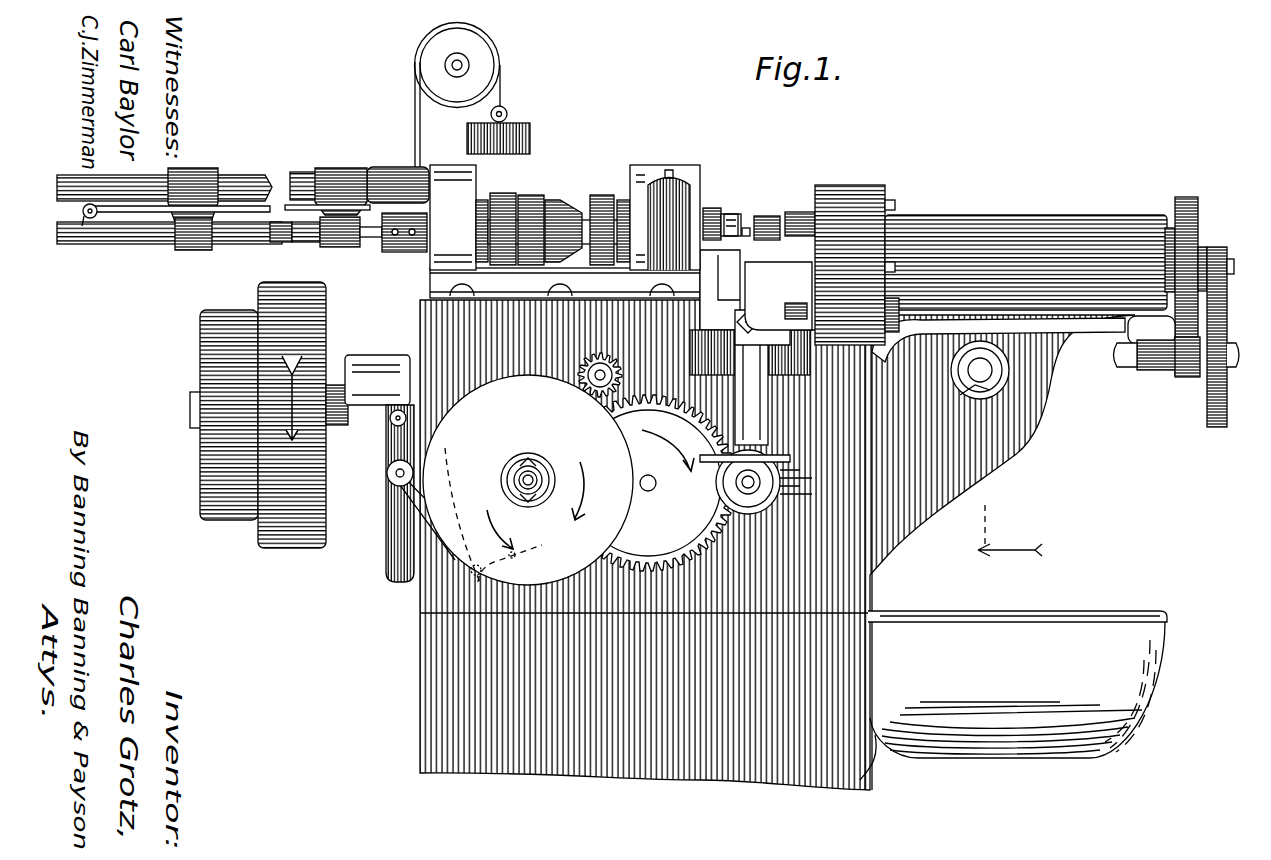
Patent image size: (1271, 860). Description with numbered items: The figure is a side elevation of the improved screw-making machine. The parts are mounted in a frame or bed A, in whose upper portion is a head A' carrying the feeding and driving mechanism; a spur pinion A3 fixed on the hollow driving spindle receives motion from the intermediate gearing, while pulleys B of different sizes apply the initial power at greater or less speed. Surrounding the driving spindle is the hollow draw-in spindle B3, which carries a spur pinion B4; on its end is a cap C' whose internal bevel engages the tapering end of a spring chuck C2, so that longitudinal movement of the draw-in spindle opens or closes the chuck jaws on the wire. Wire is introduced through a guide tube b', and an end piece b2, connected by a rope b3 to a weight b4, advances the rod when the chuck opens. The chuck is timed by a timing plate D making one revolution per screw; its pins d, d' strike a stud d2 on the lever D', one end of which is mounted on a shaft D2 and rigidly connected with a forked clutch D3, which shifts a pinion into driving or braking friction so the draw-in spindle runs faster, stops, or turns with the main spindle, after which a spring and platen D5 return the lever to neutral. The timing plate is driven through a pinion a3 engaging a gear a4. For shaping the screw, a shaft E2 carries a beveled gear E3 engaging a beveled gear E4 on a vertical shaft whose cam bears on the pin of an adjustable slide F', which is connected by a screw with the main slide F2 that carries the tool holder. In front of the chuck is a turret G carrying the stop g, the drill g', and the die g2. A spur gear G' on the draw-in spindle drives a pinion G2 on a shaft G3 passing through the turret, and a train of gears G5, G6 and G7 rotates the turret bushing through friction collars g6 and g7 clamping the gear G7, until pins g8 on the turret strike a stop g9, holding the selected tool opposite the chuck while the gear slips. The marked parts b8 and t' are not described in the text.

The frame or bed A is at (793, 545).
The head A' is at (417, 198).
The spur pinion A3 is at (498, 216).
The pulleys B is at (278, 412).
The draw-in spindle B3 is at (555, 205).
The spur pinion B4 is at (532, 215).
The guide tube b' is at (169, 250).
The end piece b2 is at (87, 220).
The rope b3 is at (232, 206).
The weight b4 is at (508, 140).
The rod couplings b8 is at (378, 232).
The cap C' is at (715, 201).
The spring chuck C2 is at (738, 214).
The timing plate D is at (528, 480).
The lever D' is at (466, 511).
The shaft D2 is at (396, 476).
The forked clutch D3 is at (390, 440).
The spring and platen D5 is at (394, 500).
The pin d is at (510, 555).
The pin d' is at (532, 561).
The stud d2 is at (470, 580).
The shaft E2 is at (748, 490).
The beveled gear E3 is at (782, 494).
The beveled gear E4 is at (780, 468).
The adjustable slide F' is at (731, 377).
The main slide F2 is at (728, 252).
The turret G is at (991, 253).
The spur gear G' is at (602, 214).
The pinion G2 is at (1232, 268).
The shaft G3 is at (778, 290).
The gear G5 is at (1213, 422).
The gear G6 is at (1186, 380).
The gear G7 is at (1185, 200).
The stop g is at (795, 302).
The drill g' is at (778, 296).
The die g2 is at (775, 262).
The friction collar g6 is at (1168, 245).
The friction collar g7 is at (1208, 262).
The pins g8 is at (892, 330).
The stop g9 is at (960, 358).
The pinion a3 is at (612, 368).
The gear a4 is at (648, 483).
The arm t' is at (963, 411).